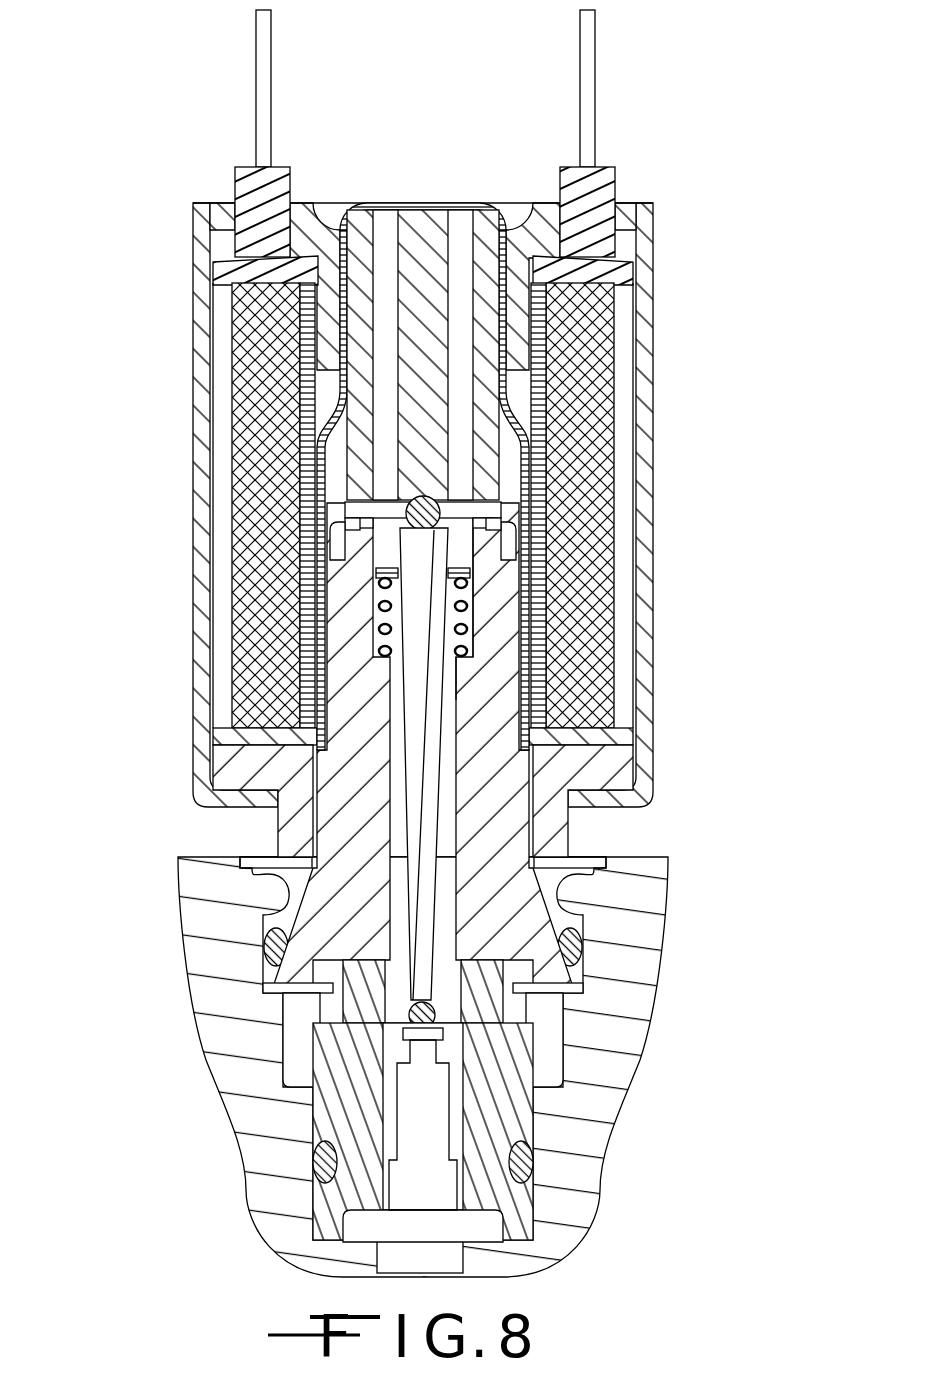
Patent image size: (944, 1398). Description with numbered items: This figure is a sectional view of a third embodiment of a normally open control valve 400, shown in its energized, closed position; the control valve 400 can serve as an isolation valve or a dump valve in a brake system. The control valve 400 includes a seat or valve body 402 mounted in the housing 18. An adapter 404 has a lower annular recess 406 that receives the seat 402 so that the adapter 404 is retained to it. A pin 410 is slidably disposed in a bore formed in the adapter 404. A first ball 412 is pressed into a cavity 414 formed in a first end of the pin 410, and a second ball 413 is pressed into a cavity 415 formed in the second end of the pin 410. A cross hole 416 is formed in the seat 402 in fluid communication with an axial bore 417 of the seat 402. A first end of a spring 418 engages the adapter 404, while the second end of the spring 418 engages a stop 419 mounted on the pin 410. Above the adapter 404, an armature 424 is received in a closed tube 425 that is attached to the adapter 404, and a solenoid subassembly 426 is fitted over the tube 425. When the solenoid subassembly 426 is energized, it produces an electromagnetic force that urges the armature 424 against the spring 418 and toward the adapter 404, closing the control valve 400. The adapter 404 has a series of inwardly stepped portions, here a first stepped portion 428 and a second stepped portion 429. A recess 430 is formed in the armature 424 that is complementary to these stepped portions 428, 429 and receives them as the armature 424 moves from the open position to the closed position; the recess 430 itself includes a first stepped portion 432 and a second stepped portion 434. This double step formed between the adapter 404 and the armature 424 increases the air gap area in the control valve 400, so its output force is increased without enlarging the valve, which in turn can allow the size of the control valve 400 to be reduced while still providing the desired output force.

The control valve 400 is at (406, 643).
The closed tube 425 is at (375, 205).
The armature 424 is at (432, 240).
The solenoid subassembly 426 is at (655, 228).
The second ball 413 is at (432, 498).
The recess 430 is at (505, 510).
The first stepped portion 428 is at (362, 505).
The second stepped portion 429 is at (345, 527).
The first stepped portion 432 is at (518, 525).
The second stepped portion 434 is at (505, 540).
The stop 419 is at (378, 575).
The cavity 415 is at (467, 592).
The spring 418 is at (470, 632).
The first ball 412 is at (430, 800).
The pin 410 is at (495, 762).
The adapter 404 is at (265, 910).
The lower annular recess 406 is at (330, 990).
The cavity 414 is at (435, 1002).
The cross hole 416 is at (517, 1047).
The axial bore 417 is at (398, 1143).
The seat 402 is at (498, 1095).
The housing 18 is at (583, 1170).